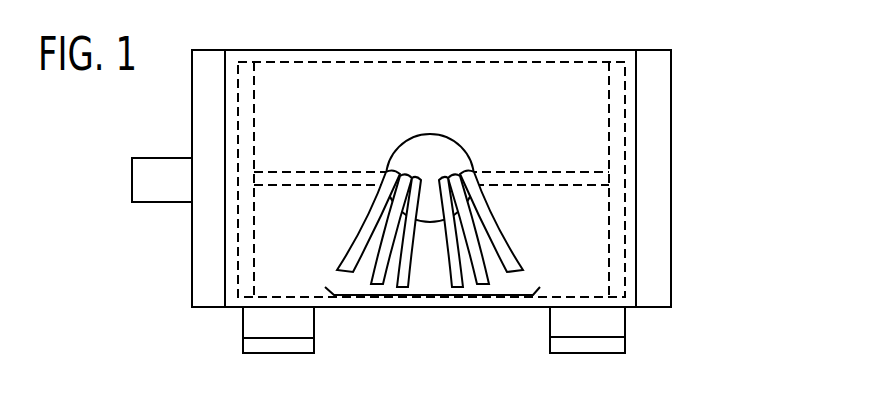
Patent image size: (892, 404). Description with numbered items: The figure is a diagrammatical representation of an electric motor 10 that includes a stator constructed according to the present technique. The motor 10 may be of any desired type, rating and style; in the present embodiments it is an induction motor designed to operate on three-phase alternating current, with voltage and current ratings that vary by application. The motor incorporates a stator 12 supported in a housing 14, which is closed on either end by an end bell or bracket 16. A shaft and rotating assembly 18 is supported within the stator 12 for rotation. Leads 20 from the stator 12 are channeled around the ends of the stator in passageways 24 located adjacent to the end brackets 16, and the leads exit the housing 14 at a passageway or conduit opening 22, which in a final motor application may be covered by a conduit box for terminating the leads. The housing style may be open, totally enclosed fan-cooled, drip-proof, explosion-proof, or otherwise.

The electric motor 10 is at (460, 188).
The stator 12 is at (538, 72).
The housing 14 is at (458, 50).
The end bell or bracket 16 is at (192, 99).
The shaft and rotating assembly 18 is at (162, 197).
The leads 20 is at (425, 297).
The passageway or conduit opening 22 is at (450, 143).
The passageways 24 is at (245, 274).